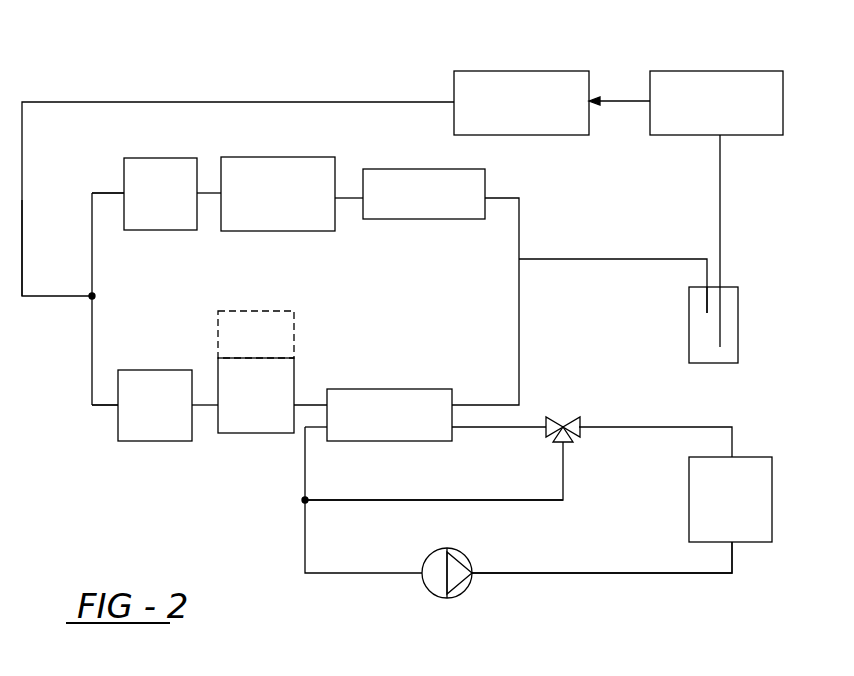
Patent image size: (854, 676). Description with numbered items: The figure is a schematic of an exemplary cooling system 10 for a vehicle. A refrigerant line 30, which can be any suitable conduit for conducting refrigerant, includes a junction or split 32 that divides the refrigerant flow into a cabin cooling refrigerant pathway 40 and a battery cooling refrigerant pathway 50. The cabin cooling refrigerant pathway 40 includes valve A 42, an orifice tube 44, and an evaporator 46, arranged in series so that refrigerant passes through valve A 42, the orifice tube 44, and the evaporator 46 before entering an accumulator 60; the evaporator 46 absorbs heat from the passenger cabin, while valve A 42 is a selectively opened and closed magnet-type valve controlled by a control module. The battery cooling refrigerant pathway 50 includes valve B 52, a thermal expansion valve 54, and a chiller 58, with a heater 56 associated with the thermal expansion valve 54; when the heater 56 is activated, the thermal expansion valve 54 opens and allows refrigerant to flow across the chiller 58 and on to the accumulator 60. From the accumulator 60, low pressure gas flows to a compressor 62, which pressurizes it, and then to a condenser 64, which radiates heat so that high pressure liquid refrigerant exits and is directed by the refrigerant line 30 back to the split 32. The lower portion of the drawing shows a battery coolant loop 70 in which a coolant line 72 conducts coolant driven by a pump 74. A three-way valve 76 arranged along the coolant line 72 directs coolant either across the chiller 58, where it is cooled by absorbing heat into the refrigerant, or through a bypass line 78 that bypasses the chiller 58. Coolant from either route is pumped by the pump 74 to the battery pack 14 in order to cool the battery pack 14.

The cooling system 10 is at (108, 70).
The battery pack 14 is at (689, 502).
The refrigerant line 30 is at (45, 297).
The junction or split 32 is at (92, 296).
The cabin cooling refrigerant pathway 40 is at (92, 193).
The valve A (first valve) 42 is at (160, 158).
The orifice tube 44 is at (283, 157).
The evaporator 46 is at (422, 219).
The battery cooling refrigerant pathway 50 is at (92, 405).
The valve B (second valve) 52 is at (140, 441).
The thermal expansion valve (TXV) 54 is at (270, 433).
The heater 56 is at (294, 336).
The chiller 58 is at (375, 441).
The accumulator 60 is at (689, 333).
The compressor 62 is at (748, 71).
The condenser 64 is at (522, 71).
The battery coolant loop 70 is at (534, 592).
The coolant line 72 is at (683, 573).
The pump 74 is at (432, 592).
The three-way valve 76 is at (570, 427).
The bypass line 78 is at (510, 500).